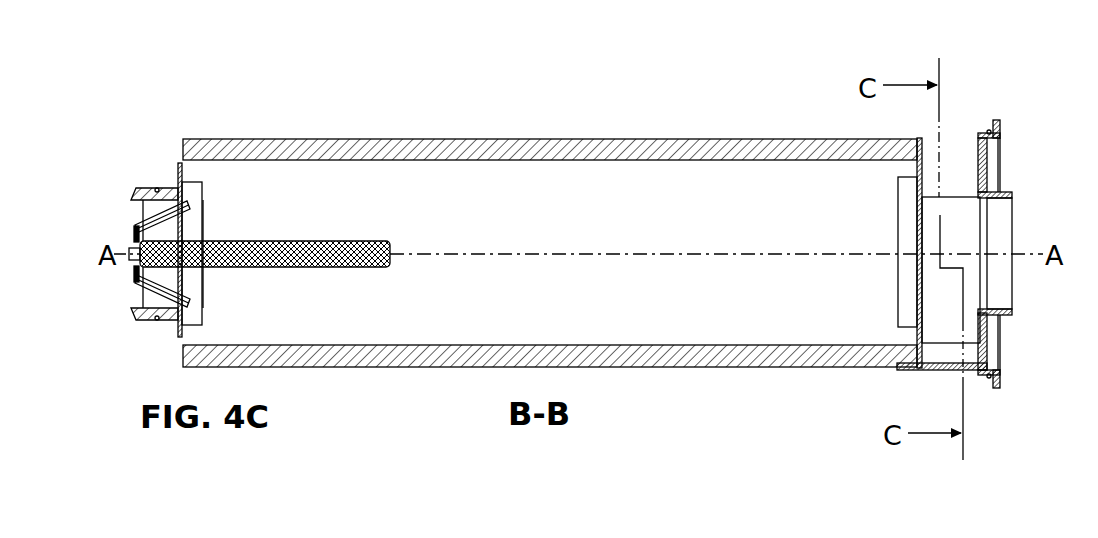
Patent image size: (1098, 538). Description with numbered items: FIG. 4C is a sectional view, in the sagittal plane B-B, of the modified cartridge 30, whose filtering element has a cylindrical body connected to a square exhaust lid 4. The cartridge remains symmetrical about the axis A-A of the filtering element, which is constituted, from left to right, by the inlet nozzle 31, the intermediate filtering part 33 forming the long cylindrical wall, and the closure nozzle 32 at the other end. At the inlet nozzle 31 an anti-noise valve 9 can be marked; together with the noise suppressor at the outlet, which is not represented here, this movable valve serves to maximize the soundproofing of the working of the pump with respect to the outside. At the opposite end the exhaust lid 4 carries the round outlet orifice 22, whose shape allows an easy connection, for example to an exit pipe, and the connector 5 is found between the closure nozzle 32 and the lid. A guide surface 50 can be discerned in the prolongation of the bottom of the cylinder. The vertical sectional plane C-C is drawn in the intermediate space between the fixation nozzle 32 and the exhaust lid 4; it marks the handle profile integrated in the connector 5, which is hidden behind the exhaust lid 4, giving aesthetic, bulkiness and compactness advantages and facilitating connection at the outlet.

The modified cartridge 30 is at (263, 127).
The intermediate filtering part 33 is at (432, 361).
The inlet nozzle 31 is at (180, 331).
The anti-noise valve 9 is at (175, 191).
The closure nozzle 32 is at (902, 278).
The connector 5 is at (958, 132).
The guide surface 50 is at (965, 378).
The exhaust lid 4 is at (1015, 121).
The outlet orifice 22 is at (1024, 220).